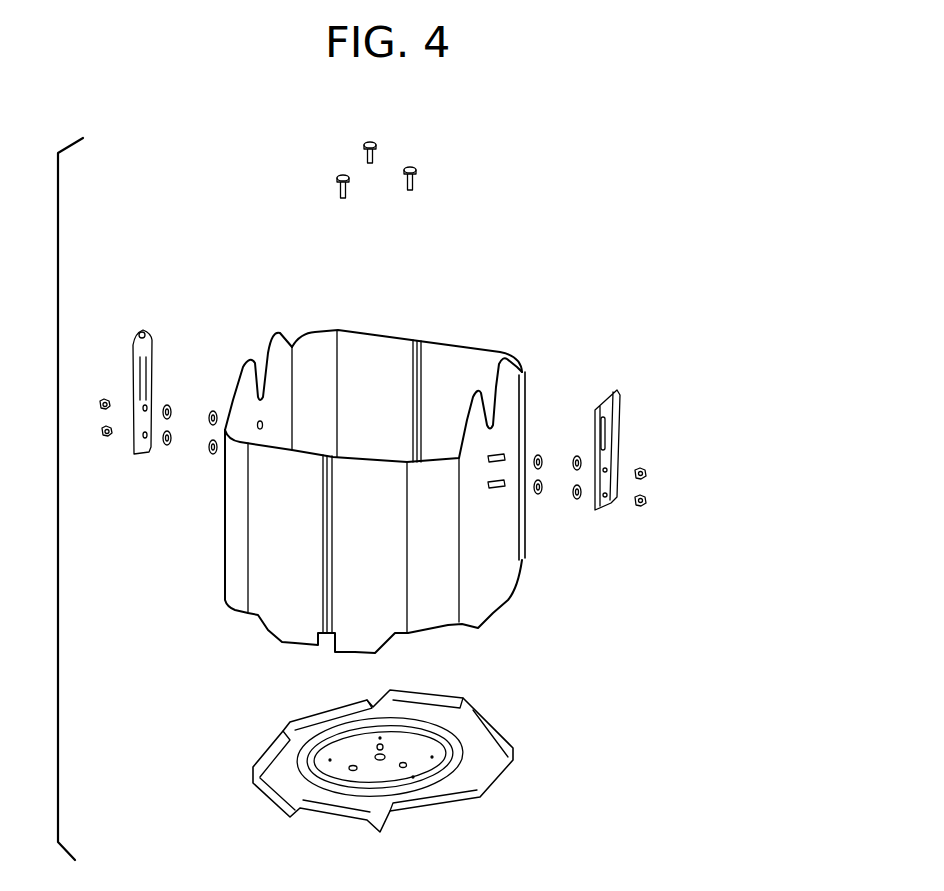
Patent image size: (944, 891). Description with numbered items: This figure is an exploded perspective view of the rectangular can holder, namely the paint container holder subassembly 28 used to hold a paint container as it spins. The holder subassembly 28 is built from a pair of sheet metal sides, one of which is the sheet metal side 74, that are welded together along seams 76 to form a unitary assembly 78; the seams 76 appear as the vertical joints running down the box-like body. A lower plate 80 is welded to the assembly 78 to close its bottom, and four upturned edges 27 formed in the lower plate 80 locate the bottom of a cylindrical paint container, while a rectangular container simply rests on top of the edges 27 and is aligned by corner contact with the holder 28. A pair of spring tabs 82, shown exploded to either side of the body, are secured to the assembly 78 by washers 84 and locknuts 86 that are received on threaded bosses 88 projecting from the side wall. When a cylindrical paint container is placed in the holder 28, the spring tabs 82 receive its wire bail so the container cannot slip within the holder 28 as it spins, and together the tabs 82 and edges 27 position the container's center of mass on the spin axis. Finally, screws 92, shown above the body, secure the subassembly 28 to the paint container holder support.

The paint container holder subassembly 28 is at (553, 267).
The sheet metal side 74 is at (388, 543).
The seam 76 is at (421, 342).
The unitary assembly 78 is at (297, 533).
The lower plate 80 is at (515, 727).
The upturned edge 27 is at (340, 700).
The spring tab 82 is at (152, 337).
The washer 84 is at (211, 440).
The locknut 86 is at (112, 400).
The threaded boss 88 is at (484, 462).
The screw 92 is at (356, 190).